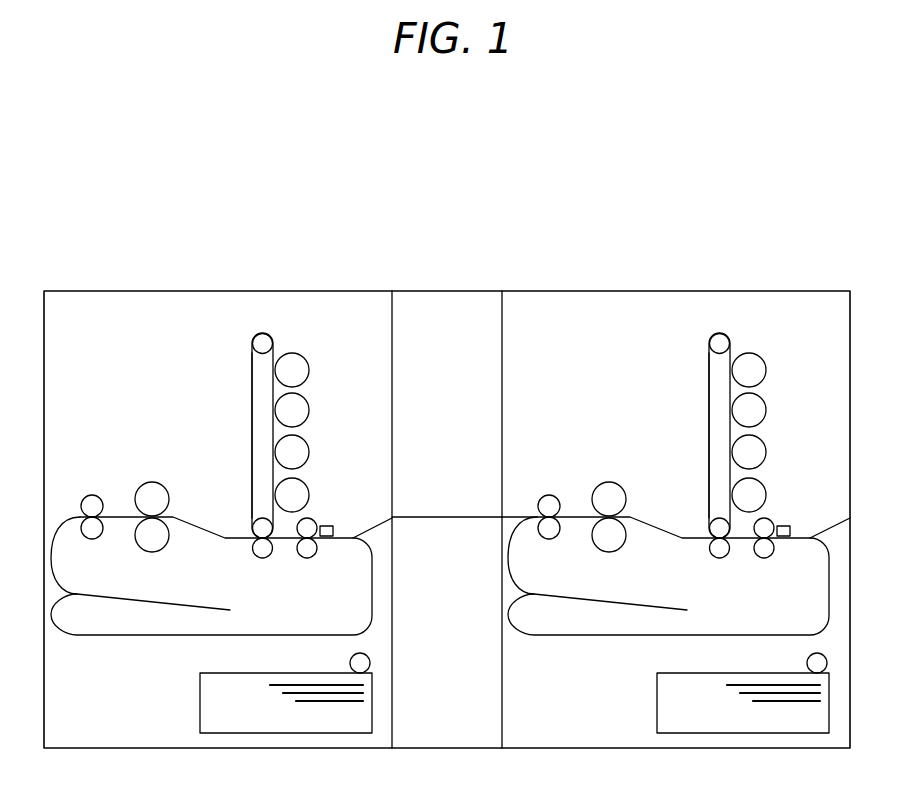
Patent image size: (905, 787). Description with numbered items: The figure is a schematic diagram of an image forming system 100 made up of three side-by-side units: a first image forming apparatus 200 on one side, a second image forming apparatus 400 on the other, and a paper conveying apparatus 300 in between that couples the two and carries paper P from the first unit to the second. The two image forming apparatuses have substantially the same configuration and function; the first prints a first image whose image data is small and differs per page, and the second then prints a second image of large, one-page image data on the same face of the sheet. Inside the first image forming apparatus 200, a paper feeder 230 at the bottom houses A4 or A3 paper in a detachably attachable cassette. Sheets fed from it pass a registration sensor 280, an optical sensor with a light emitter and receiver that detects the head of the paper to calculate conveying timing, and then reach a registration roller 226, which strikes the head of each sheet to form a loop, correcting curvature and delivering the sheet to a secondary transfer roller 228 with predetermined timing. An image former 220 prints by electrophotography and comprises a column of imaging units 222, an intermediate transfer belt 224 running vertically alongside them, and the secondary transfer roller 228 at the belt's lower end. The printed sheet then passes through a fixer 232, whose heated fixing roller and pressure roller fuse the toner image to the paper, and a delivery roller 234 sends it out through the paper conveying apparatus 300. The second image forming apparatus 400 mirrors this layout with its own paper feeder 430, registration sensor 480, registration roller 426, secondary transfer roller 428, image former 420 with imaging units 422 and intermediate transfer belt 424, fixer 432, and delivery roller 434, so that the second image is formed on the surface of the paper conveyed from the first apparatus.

The image forming system 100 is at (494, 164).
The first image forming apparatus 200 is at (683, 291).
The paper conveying apparatus 300 is at (447, 291).
The second image forming apparatus 400 is at (226, 291).
The image former 220 is at (695, 362).
The imaging units 222 is at (767, 370).
The intermediate transfer belt 224 is at (709, 420).
The registration roller 226 is at (764, 558).
The secondary transfer roller 228 is at (719, 558).
The paper feeder 230 is at (657, 703).
The fixer 232 is at (608, 495).
The delivery roller 234 is at (549, 500).
The registration sensor 280 is at (785, 525).
The image former 420 is at (238, 362).
The imaging units 422 is at (310, 370).
The intermediate transfer belt 424 is at (252, 420).
The registration roller 426 is at (307, 558).
The secondary transfer roller 428 is at (262, 558).
The paper feeder 430 is at (200, 703).
The fixer 432 is at (151, 495).
The delivery roller 434 is at (92, 500).
The registration sensor 480 is at (328, 525).